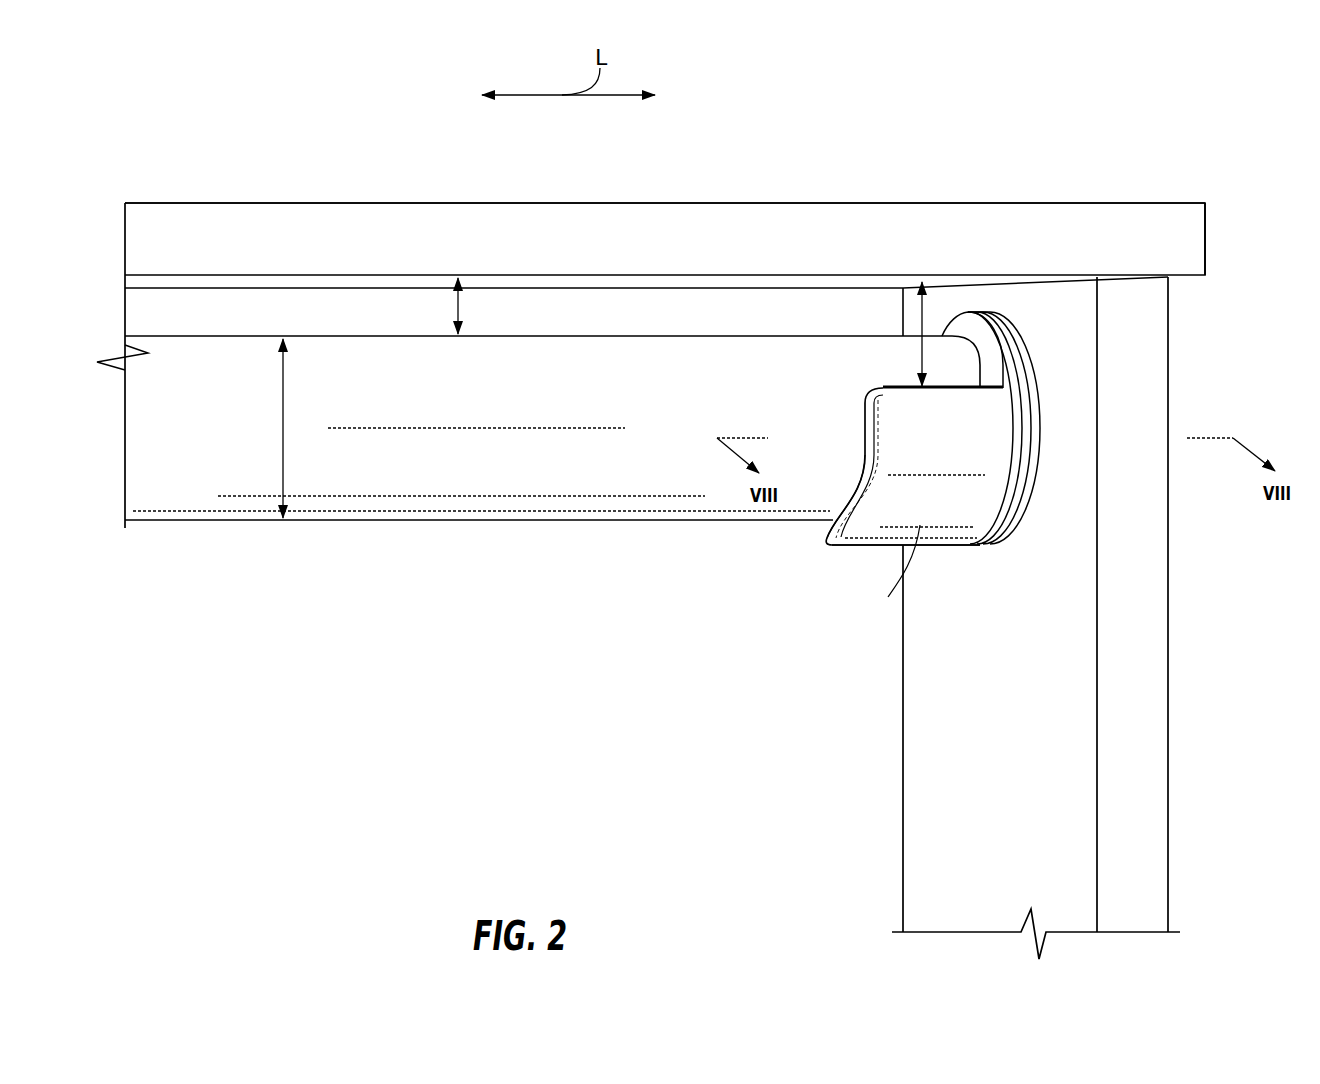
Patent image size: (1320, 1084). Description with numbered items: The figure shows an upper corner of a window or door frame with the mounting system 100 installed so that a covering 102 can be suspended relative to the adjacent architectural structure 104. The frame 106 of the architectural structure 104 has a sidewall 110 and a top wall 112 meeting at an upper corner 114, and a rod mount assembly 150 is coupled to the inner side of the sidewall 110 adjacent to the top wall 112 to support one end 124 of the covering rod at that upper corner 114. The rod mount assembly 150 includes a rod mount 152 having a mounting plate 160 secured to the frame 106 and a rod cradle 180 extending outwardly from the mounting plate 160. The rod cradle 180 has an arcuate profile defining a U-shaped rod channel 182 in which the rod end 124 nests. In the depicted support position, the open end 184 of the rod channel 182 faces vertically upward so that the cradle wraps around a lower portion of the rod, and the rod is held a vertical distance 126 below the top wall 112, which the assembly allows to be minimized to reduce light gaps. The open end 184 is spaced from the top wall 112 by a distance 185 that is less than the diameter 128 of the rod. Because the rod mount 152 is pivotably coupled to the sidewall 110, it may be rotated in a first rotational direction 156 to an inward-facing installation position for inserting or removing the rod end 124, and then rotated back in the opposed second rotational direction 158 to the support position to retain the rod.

The mounting system 100 is at (463, 604).
The covering 102 is at (178, 486).
The architectural structure 104 is at (1194, 92).
The frame 106 is at (758, 201).
The sidewall 110 is at (1154, 645).
The top wall 112 is at (268, 222).
The upper corner 114 is at (1221, 197).
The end of covering rod 124 is at (880, 352).
The vertical distance 126 is at (456, 303).
The diameter of covering rod 128 is at (287, 437).
The rod mount assembly 150 is at (1070, 321).
The rod mount 152 is at (1047, 412).
The first rotational direction 156 is at (859, 573).
The second rotational direction 158 is at (945, 535).
The mounting plate 160 is at (1042, 448).
The rod cradle 180 is at (978, 495).
The rod channel 182 is at (821, 529).
The open end of rod channel 184 is at (968, 387).
The distance 185 is at (923, 312).